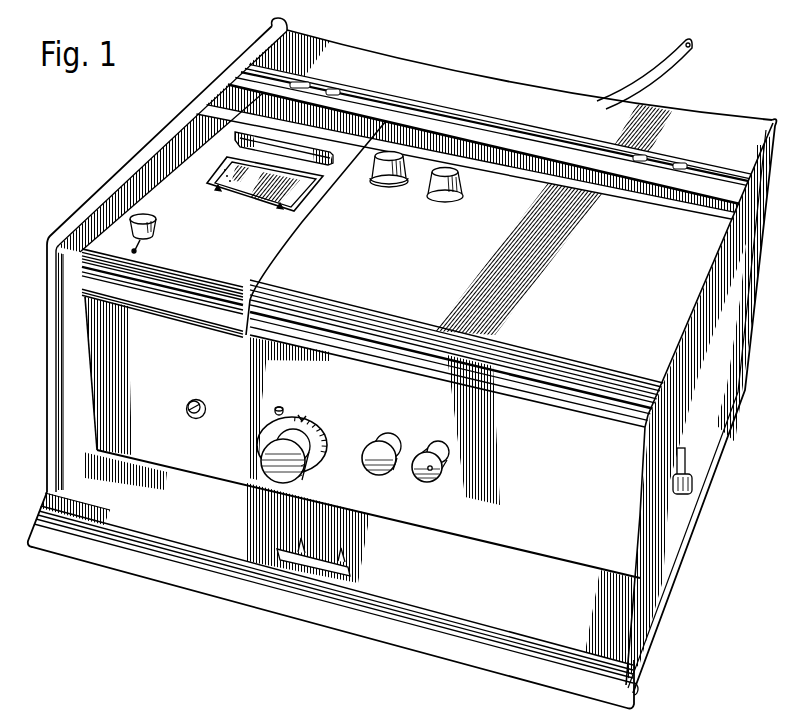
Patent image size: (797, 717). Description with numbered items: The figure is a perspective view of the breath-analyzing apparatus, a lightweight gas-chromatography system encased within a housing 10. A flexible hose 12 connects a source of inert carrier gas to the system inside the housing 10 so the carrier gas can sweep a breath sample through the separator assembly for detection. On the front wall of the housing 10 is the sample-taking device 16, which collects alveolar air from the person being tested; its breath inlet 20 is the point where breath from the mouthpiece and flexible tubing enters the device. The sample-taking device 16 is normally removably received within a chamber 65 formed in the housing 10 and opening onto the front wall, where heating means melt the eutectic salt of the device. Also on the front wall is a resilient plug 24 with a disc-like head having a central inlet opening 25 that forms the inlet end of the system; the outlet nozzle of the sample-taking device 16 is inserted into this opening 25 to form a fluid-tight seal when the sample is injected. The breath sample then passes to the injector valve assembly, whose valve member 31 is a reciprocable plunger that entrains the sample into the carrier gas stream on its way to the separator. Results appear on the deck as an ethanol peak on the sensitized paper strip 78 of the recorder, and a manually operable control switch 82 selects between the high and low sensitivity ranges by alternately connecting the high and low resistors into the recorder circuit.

The housing 10 is at (617, 275).
The flexible hose 12 is at (663, 66).
The sample-taking device 16 is at (290, 478).
The breath inlet 20 is at (285, 412).
The plug 24 is at (414, 471).
The central inlet opening 25 is at (428, 471).
The valve member 31 is at (378, 466).
The chamber 65 is at (302, 417).
The sensitized paper strip 78 is at (303, 182).
The manually operable control switch 82 is at (465, 187).